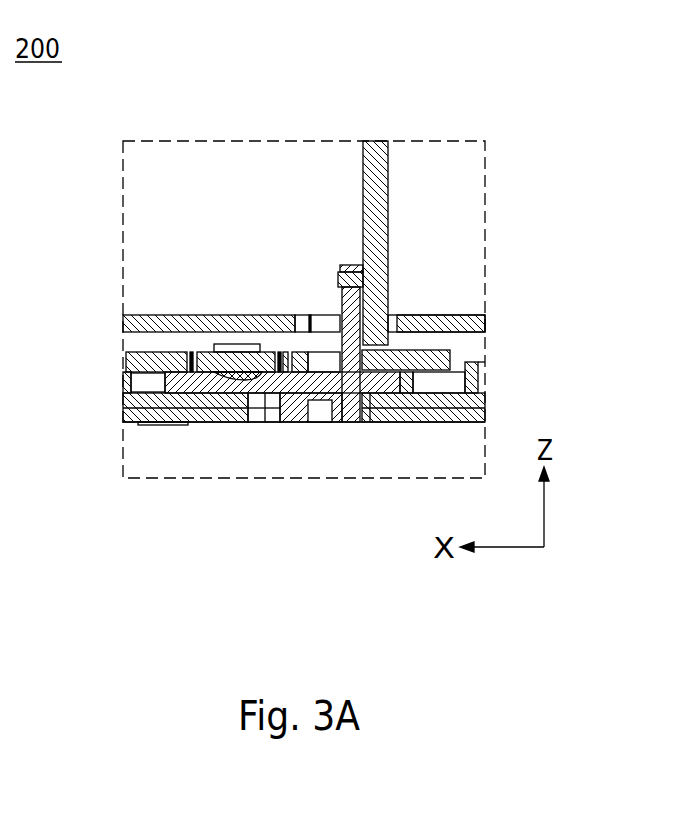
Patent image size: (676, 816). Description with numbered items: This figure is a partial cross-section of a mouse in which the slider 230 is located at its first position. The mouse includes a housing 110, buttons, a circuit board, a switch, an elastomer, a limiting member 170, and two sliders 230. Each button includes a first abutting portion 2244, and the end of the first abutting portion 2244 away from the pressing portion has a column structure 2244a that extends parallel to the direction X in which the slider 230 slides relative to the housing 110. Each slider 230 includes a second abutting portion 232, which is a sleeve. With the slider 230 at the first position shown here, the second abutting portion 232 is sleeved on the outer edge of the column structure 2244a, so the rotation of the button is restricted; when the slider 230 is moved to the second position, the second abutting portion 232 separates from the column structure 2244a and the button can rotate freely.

The first abutting portion 2244 is at (375, 213).
The column structure 2244a is at (342, 270).
The second abutting portion 232 is at (340, 312).
The slider 230 is at (211, 406).
The limiting member 170 is at (152, 360).
The housing 110 is at (228, 393).